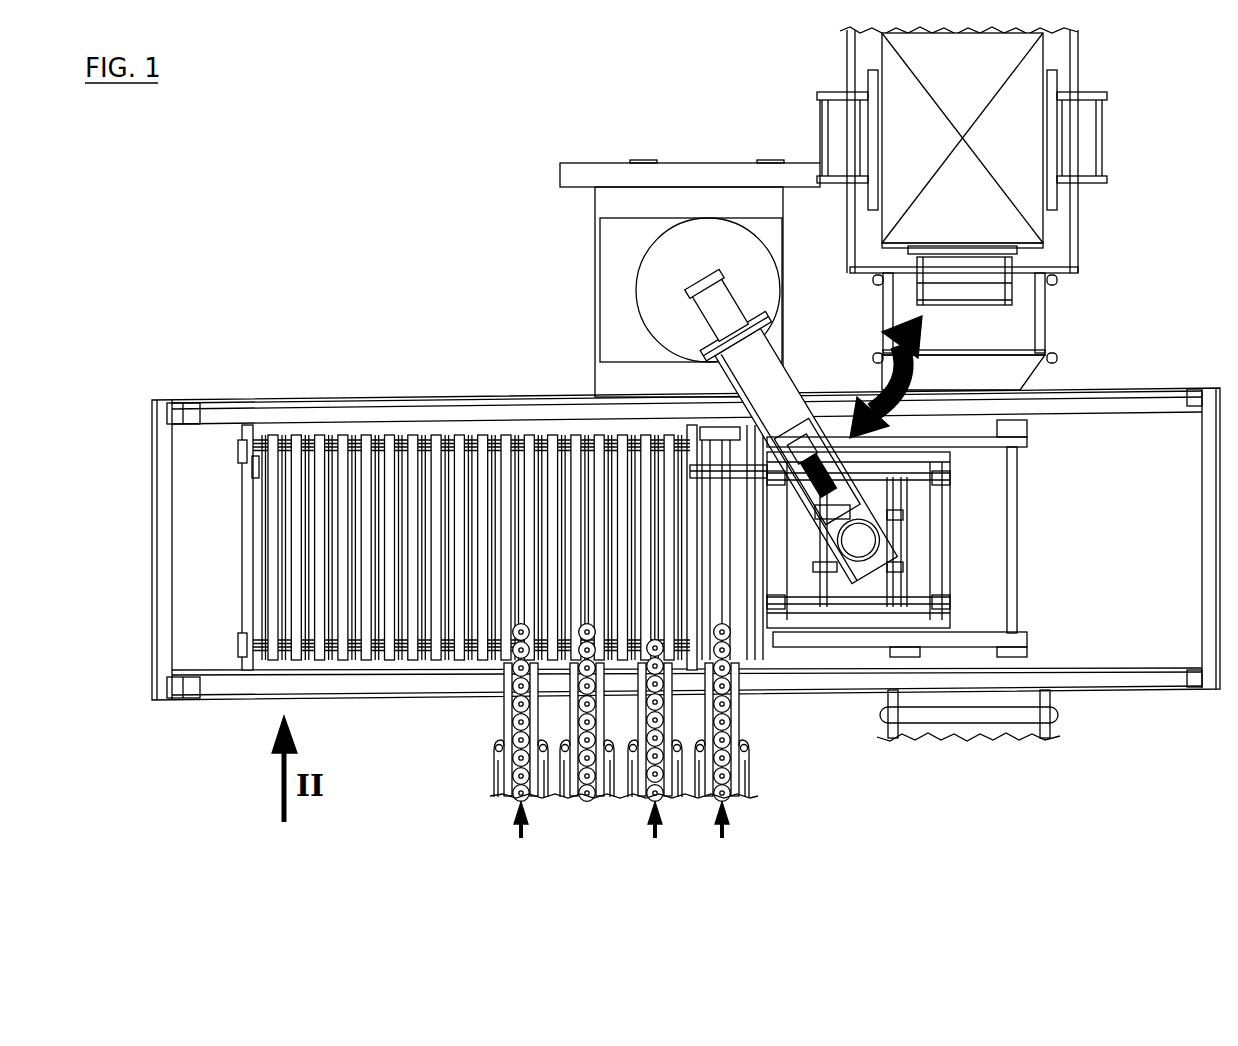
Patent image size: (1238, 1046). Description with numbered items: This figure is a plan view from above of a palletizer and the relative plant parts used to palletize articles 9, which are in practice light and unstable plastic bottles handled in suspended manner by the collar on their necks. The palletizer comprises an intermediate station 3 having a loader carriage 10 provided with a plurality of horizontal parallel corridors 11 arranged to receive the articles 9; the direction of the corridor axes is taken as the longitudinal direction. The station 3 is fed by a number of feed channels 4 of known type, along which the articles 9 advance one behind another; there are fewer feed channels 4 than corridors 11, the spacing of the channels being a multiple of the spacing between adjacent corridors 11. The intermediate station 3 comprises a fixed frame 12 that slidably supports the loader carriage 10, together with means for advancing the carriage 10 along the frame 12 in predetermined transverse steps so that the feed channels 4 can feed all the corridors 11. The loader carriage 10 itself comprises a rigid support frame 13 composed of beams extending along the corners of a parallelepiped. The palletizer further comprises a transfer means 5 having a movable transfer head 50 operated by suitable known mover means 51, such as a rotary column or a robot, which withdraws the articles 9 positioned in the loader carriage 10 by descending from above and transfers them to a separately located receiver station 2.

The receiver station 2 is at (1068, 79).
The intermediate station 3 is at (323, 390).
The feed channels 4 is at (492, 778).
The transfer means 5 is at (662, 305).
The articles 9 is at (510, 688).
The loader carriage 10 is at (240, 514).
The corridors 11 is at (541, 428).
The fixed frame 12 is at (1200, 545).
The rigid support frame 13 is at (243, 597).
The transfer head 50 is at (1028, 510).
The mover means 51 is at (798, 358).